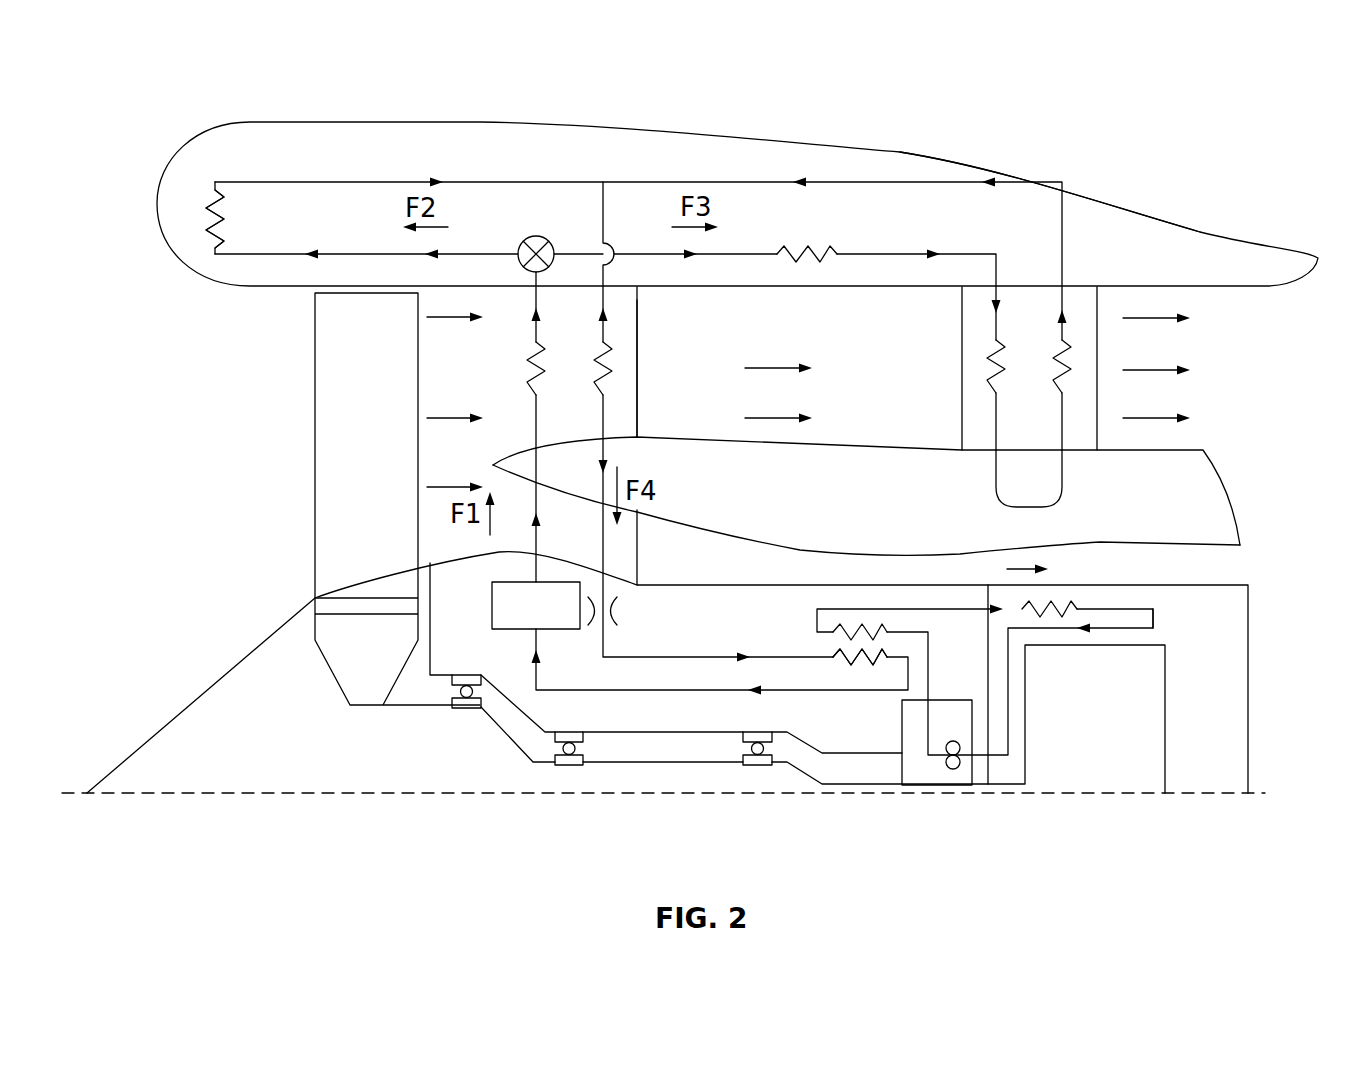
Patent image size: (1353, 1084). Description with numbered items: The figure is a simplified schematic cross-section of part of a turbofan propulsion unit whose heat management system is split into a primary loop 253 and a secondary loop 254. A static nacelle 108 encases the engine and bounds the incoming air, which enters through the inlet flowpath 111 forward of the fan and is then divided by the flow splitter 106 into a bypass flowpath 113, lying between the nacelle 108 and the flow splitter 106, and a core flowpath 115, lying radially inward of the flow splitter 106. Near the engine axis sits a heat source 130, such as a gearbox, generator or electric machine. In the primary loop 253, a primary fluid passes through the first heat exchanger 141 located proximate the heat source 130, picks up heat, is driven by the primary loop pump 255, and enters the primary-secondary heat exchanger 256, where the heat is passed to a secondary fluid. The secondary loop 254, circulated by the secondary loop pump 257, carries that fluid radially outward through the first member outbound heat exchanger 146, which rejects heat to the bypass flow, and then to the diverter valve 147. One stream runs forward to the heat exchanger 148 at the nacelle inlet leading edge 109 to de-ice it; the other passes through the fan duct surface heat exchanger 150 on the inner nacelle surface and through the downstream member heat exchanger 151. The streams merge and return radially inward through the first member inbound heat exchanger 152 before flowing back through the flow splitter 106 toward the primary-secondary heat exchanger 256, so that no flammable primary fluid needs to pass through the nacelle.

The flow splitter 106 is at (733, 507).
The nacelle 108 is at (1047, 183).
The nacelle inlet leading edge 109 is at (156, 206).
The inlet flowpath 111 is at (273, 458).
The bypass flowpath 113 is at (871, 404).
The core flowpath 115 is at (689, 572).
The heat source 130 is at (1119, 732).
The first heat exchanger 141 is at (1082, 596).
The first member outbound heat exchanger 146 is at (514, 370).
The diverter valve 147 is at (538, 226).
The heat exchanger 148 is at (213, 175).
The fan duct surface heat exchanger 150 is at (814, 242).
The downstream member heat exchanger 151 is at (1085, 312).
The first member inbound heat exchanger 152 is at (645, 352).
The primary loop 253 is at (1178, 620).
The secondary loop 254 is at (633, 705).
The primary loop pump 255 is at (936, 803).
The primary-secondary heat exchanger 256 is at (868, 662).
The secondary loop pump 257 is at (485, 608).